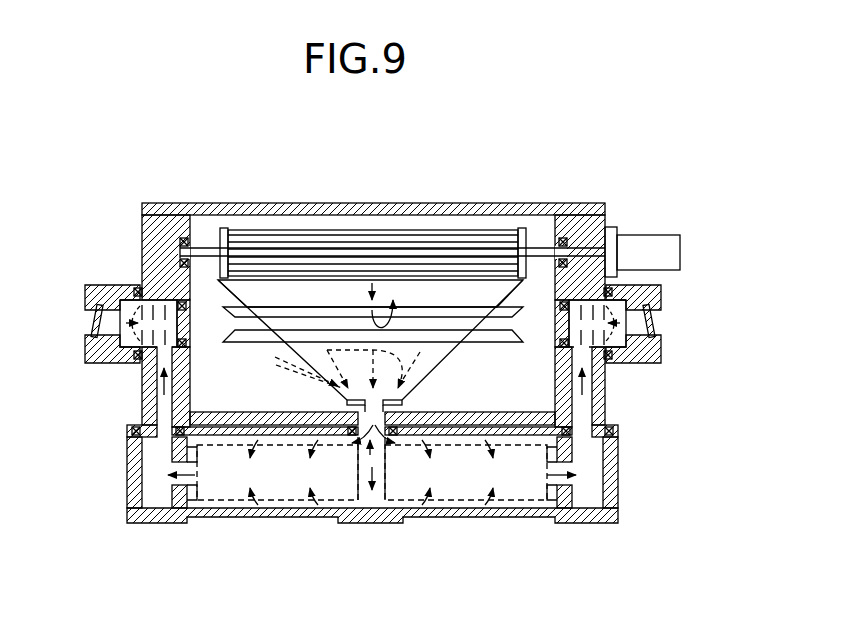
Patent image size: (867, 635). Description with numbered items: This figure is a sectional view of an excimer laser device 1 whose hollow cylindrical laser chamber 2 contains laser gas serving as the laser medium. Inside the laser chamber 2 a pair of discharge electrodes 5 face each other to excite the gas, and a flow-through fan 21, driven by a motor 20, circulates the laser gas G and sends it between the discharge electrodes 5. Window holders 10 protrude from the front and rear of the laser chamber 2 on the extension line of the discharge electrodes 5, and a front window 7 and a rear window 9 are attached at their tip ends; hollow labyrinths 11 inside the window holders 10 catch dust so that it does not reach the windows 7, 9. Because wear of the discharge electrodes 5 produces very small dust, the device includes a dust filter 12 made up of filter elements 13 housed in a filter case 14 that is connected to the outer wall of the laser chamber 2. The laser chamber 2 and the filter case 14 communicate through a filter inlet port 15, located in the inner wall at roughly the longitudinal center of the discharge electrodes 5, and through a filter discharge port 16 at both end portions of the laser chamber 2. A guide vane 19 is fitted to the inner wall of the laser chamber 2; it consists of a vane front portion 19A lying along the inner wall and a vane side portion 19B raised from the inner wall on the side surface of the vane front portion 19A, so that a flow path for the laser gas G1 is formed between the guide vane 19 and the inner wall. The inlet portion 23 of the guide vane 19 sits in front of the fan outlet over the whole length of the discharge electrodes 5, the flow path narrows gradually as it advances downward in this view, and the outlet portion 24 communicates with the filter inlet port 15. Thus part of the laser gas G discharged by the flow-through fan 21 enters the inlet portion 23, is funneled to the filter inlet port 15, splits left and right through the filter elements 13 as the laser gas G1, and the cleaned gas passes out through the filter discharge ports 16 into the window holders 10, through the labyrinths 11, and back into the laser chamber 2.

The excimer laser device 1 is at (619, 183).
The laser chamber 2 is at (204, 203).
The discharge electrodes 5 is at (292, 331).
The front window 7 is at (98, 322).
The rear window 9 is at (654, 323).
The window holders 10 is at (97, 285).
The labyrinths 11 is at (138, 353).
The dust filter 12 is at (178, 542).
The filter elements 13 is at (221, 502).
The filter case 14 is at (288, 511).
The filter inlet port 15 is at (347, 404).
The filter discharge port 16 is at (175, 432).
The guide vane 19 is at (512, 347).
The vane front portion 19A is at (447, 346).
The vane side portion 19B is at (432, 370).
The motor 20 is at (651, 235).
The flow-through fan 21 is at (294, 228).
The inlet portion 23 is at (487, 292).
The outlet portion 24 is at (391, 406).
The laser gas flow G is at (372, 283).
The filtered laser gas flow G1 is at (275, 358).